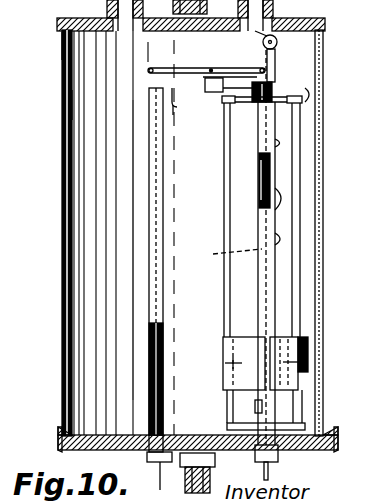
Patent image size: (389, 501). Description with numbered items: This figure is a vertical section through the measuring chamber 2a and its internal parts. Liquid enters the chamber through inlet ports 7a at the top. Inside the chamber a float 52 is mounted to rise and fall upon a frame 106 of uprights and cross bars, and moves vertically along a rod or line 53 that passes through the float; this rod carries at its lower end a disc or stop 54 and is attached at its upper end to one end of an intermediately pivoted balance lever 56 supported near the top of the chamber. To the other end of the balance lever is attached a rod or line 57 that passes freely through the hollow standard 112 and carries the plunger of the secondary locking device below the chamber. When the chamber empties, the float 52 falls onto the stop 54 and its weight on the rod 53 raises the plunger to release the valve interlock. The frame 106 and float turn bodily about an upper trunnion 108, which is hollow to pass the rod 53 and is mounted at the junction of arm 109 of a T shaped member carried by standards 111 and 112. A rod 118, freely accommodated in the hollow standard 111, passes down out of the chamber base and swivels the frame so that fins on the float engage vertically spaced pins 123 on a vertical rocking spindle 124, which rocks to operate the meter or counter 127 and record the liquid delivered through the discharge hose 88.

The inlet ports 7a is at (62, 43).
The measuring chamber 2a is at (62, 103).
The rod or line 57 is at (150, 80).
The balance lever 56 is at (235, 70).
The meter or counter 127 is at (277, 42).
The frame 106 is at (290, 97).
The arm 109 is at (188, 117).
The upper trunnion 108 is at (276, 143).
The vertical rocking spindle 124 is at (258, 150).
The standard 111 is at (258, 170).
The rod 118 is at (276, 192).
The pins 123 is at (278, 240).
The rod or line 53 is at (228, 254).
The standard 112 is at (150, 200).
The float 52 is at (227, 336).
The disc or stop 54 is at (258, 408).
The discharge hose 88 is at (189, 477).